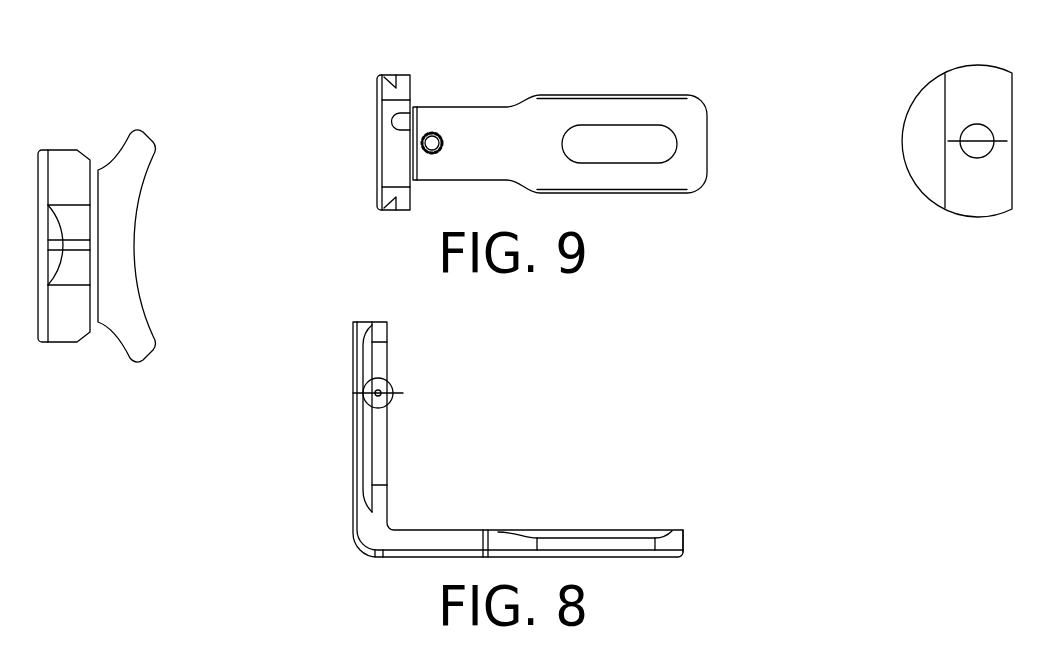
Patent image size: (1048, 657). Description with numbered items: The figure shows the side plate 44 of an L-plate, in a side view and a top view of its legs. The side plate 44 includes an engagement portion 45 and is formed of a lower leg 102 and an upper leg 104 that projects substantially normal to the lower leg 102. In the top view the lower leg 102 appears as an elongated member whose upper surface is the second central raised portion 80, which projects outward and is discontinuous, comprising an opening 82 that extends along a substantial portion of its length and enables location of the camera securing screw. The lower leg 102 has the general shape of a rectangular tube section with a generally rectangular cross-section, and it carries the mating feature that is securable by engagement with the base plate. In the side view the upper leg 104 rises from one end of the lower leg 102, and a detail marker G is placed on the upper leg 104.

In FIG. 8, the side plate 44 is at (312, 512).
In FIG. 9, the engagement portion 45 is at (676, 70).
In FIG. 8, the engagement portion 45 is at (604, 505).
In FIG. 9, the second central raised portion 80 is at (522, 155).
In FIG. 9, the opening 82 is at (632, 155).
In FIG. 9, the lower leg 102 is at (693, 158).
In FIG. 8, the lower leg 102 is at (673, 543).
In FIG. 9, the upper leg 104 is at (400, 82).
In FIG. 8, the upper leg 104 is at (377, 333).
In FIG. 8, the gap detail marker G is at (391, 393).